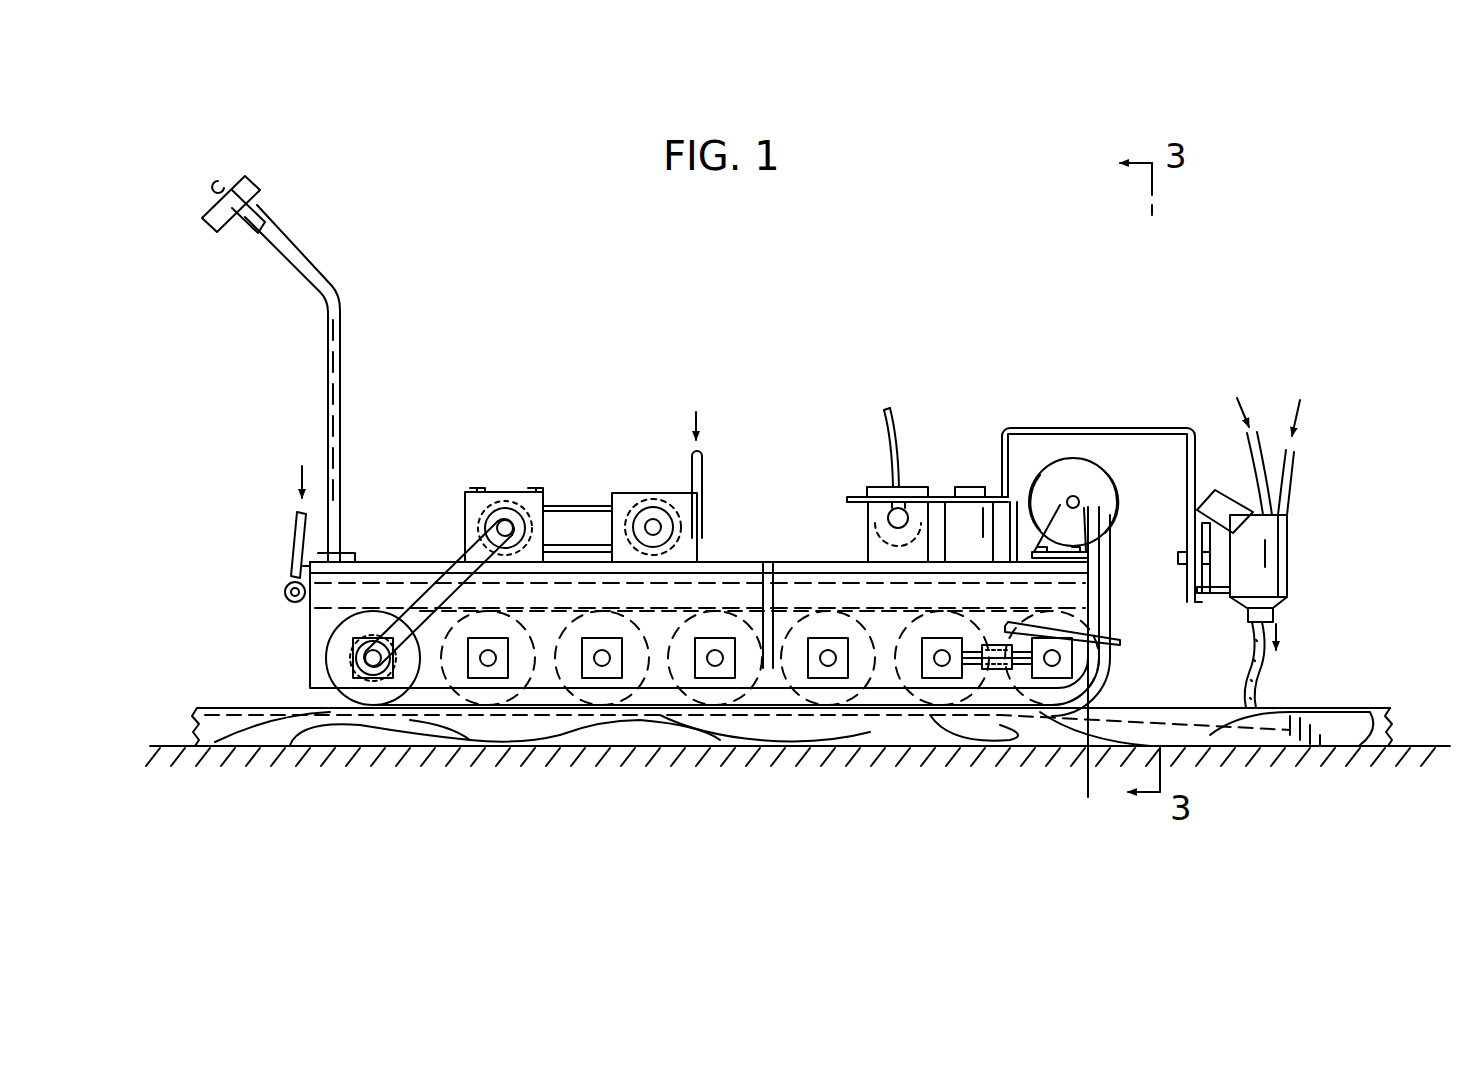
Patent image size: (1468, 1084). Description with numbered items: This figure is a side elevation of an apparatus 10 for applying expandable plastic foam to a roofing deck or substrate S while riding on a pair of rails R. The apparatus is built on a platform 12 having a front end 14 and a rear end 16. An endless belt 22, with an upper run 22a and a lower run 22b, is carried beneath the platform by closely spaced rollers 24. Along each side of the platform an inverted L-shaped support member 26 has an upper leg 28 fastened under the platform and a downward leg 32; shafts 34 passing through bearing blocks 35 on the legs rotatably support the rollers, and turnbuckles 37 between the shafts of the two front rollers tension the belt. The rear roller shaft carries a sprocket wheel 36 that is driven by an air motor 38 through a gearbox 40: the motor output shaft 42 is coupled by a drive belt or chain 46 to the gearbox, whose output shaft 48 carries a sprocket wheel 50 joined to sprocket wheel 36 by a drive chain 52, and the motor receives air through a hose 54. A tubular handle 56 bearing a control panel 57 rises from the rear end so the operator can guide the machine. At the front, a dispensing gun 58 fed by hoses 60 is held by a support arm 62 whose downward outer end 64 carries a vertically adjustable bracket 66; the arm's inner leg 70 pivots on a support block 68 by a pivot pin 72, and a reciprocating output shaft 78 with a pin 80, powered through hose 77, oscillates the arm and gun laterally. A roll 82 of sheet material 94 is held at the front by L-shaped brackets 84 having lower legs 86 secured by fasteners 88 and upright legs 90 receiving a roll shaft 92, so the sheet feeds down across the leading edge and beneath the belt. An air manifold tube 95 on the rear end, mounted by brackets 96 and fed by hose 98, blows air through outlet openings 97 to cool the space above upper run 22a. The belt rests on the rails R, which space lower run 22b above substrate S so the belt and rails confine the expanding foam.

The apparatus 10 is at (795, 328).
The platform 12 is at (724, 558).
The front end 14 is at (1015, 440).
The rear end 16 is at (360, 558).
The endless belt 22 is at (718, 687).
The upper run 22a is at (862, 606).
The lower run 22b is at (628, 712).
The rollers 24 is at (698, 721).
The support members 26 is at (308, 638).
The upper legs 28 is at (795, 580).
The legs 32 is at (660, 680).
The shafts 34 is at (714, 676).
The bearing blocks 35 is at (475, 674).
The sprocket wheel 36 is at (362, 650).
The turnbuckles 37 is at (1052, 635).
The motor 38 is at (647, 500).
The gearbox 40 is at (513, 492).
The output shaft 42 is at (653, 518).
The drive belt or chain 46 is at (577, 505).
The output shaft 48 is at (500, 522).
The sprocket wheel 50 is at (497, 527).
The drive chain 52 is at (440, 566).
The hose 54 is at (703, 470).
The tubular handle 56 is at (315, 278).
The control panel 57 is at (242, 178).
The dispensing gun 58 is at (1295, 550).
The hoses 60 is at (1286, 484).
The support arm 62 is at (1097, 428).
The outer end 64 is at (1188, 570).
The bracket 66 is at (1232, 588).
The support block 68 is at (948, 513).
The inner leg 70 is at (887, 532).
The pivot pin 72 is at (968, 497).
The hose 77 is at (880, 412).
The output shaft 78 is at (893, 518).
The pin 80 is at (897, 487).
The roll 82 is at (1073, 458).
The L-shaped brackets 84 is at (1100, 530).
The lower legs 86 is at (1110, 552).
The fasteners 88 is at (1043, 545).
The upwardly extending legs 90 is at (1084, 525).
The roll shaft 92 is at (1078, 520).
The sheet material 94 is at (1113, 603).
The air manifold tube 95 is at (283, 592).
The brackets 96 is at (296, 562).
The outlet openings 97 is at (323, 603).
The hose 98 is at (293, 522).
The rails R is at (1350, 712).
The substrate S is at (1418, 745).